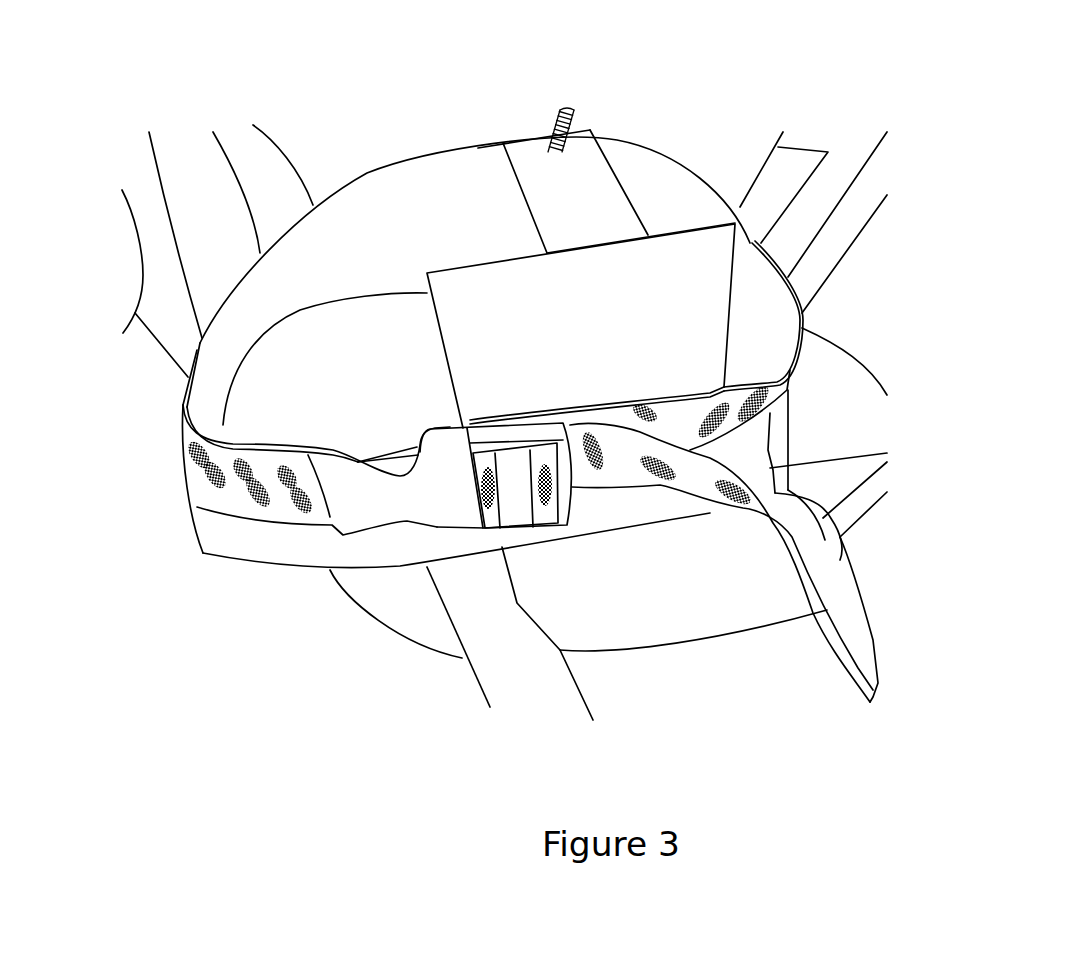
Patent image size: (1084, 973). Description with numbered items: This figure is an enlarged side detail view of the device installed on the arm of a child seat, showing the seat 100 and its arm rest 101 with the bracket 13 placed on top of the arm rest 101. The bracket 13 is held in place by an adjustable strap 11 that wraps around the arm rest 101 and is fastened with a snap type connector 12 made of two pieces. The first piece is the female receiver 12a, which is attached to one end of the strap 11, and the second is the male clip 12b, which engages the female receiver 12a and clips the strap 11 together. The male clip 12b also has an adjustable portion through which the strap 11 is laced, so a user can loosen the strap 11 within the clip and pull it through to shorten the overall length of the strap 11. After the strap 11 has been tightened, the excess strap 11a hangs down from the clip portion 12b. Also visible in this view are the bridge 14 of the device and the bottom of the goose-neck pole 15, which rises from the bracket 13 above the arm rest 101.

The seat 100 is at (290, 148).
The arm rest 101 is at (343, 213).
The adjustable strap 11 is at (773, 383).
The excess strap 11a is at (692, 477).
The snap type connector 12 is at (476, 547).
The female receiver 12a is at (432, 507).
The male clip 12b is at (515, 506).
The bracket 13 is at (662, 260).
The bridge 14 is at (503, 140).
The goose-neck pole 15 is at (550, 118).